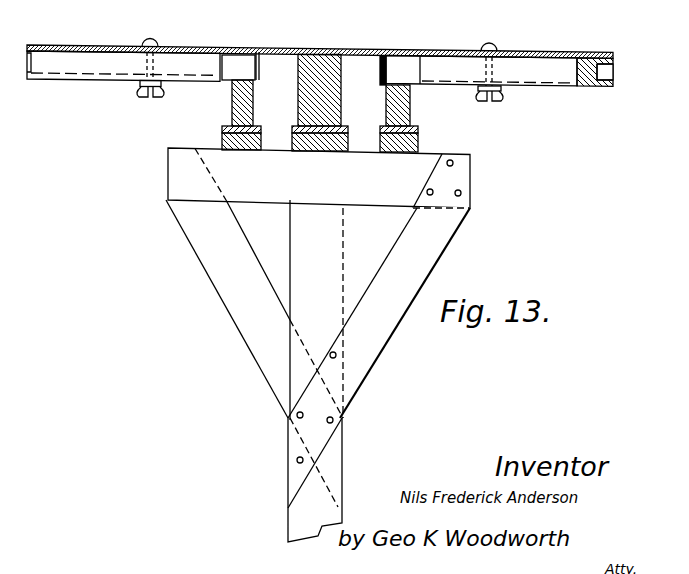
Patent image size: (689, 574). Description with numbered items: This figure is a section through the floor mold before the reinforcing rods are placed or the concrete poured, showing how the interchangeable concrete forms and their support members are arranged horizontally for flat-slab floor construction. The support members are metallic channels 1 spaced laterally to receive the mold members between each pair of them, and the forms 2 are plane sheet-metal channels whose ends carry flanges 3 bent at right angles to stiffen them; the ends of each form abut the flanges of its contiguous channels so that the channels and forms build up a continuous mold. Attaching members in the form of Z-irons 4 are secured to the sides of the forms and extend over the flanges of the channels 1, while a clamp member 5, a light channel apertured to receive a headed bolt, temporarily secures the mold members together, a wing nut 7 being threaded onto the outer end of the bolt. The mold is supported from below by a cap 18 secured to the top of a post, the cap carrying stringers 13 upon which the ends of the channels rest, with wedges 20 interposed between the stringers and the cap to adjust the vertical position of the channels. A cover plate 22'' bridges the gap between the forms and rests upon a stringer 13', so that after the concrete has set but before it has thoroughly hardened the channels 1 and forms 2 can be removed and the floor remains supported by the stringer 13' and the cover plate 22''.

The channel 1 is at (613, 78).
The form 2 is at (548, 53).
The flange 3 is at (379, 63).
The Z-iron 4 is at (563, 90).
The clamp member 5 is at (503, 92).
The wing nut 7 is at (495, 97).
The stringer 13 is at (311, 106).
The stringer 13' is at (301, 90).
The cap 18 is at (447, 174).
The wedge 20 is at (418, 134).
The cover plate 22'' is at (227, 51).